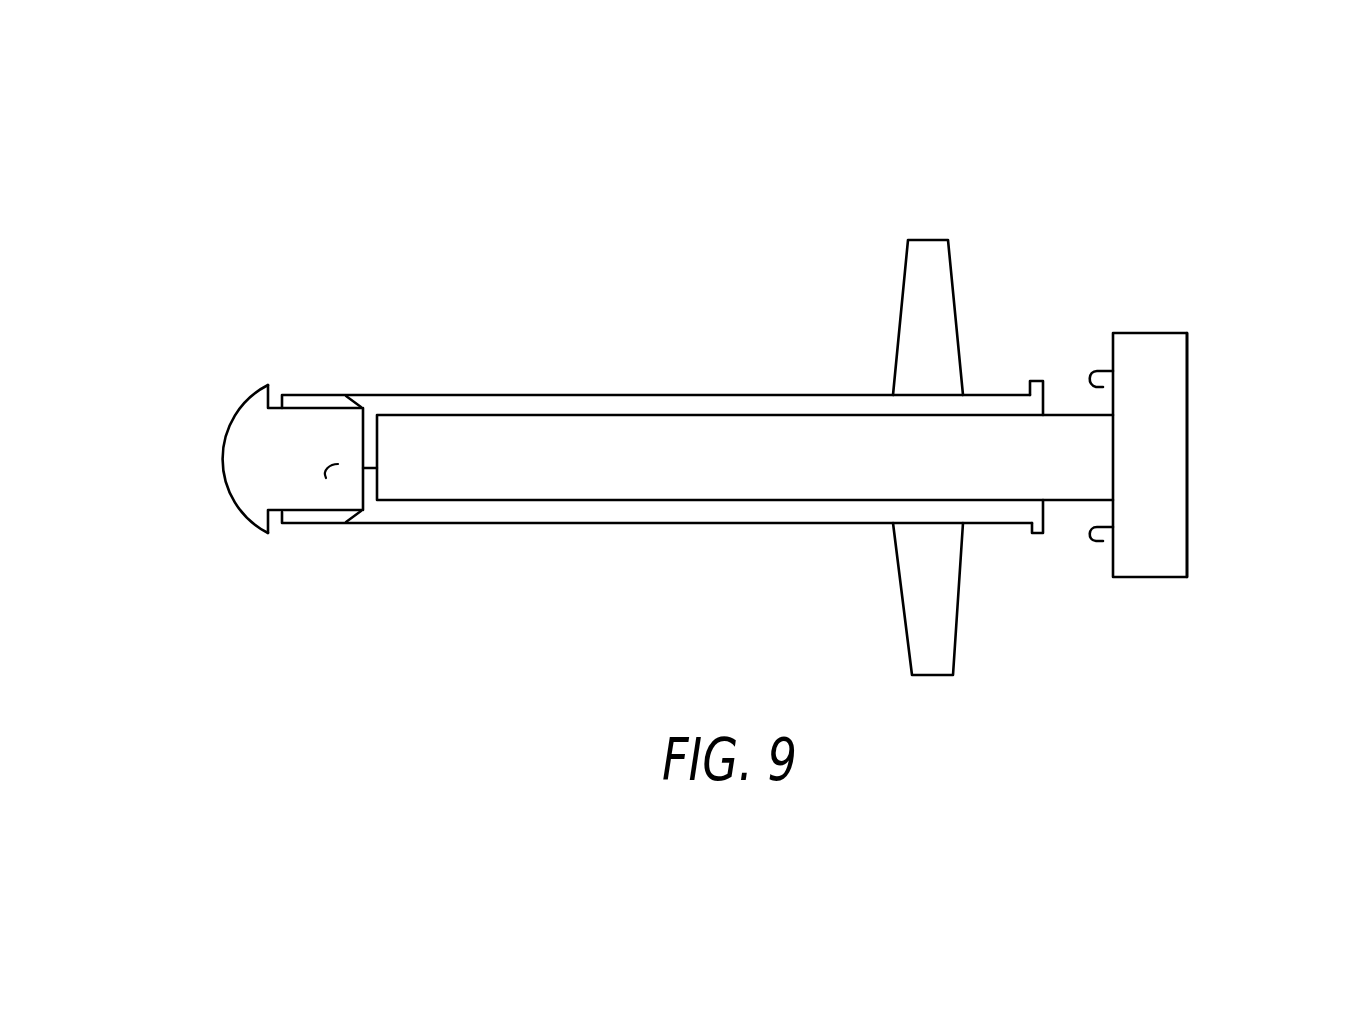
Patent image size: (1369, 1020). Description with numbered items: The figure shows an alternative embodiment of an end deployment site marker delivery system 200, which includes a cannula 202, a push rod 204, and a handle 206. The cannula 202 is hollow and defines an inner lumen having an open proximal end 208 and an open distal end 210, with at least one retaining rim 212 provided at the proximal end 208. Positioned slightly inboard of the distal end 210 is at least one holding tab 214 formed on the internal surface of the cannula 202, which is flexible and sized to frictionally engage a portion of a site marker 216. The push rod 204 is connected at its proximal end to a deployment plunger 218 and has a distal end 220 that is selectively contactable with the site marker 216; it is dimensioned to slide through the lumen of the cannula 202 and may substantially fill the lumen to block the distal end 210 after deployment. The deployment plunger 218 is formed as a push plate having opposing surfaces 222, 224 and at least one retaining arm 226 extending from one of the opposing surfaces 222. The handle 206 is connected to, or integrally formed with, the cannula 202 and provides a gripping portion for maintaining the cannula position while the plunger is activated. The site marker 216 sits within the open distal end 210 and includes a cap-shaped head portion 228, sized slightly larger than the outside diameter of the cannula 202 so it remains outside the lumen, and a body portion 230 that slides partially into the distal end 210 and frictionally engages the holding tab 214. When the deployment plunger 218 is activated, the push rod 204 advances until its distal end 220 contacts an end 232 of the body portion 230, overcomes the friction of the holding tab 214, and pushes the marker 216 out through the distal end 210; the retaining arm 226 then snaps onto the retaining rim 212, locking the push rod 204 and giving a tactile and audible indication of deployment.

The end deployment site marker delivery system 200 is at (214, 224).
The cannula 202 is at (618, 512).
The push rod 204 is at (580, 433).
The handle 206 is at (915, 313).
The proximal end 208 is at (1054, 526).
The distal end 210 is at (286, 541).
The retaining rim 212 is at (1033, 378).
The holding tab 214 is at (347, 522).
The site marker 216 is at (317, 430).
The deployment plunger 218 is at (1150, 348).
The distal end 220 is at (372, 465).
The opposing surface 222 is at (1190, 530).
The opposing surface 224 is at (1112, 513).
The retaining arm 226 is at (1097, 543).
The head portion 228 is at (240, 458).
The body portion 230 is at (328, 475).
The end 232 is at (377, 468).